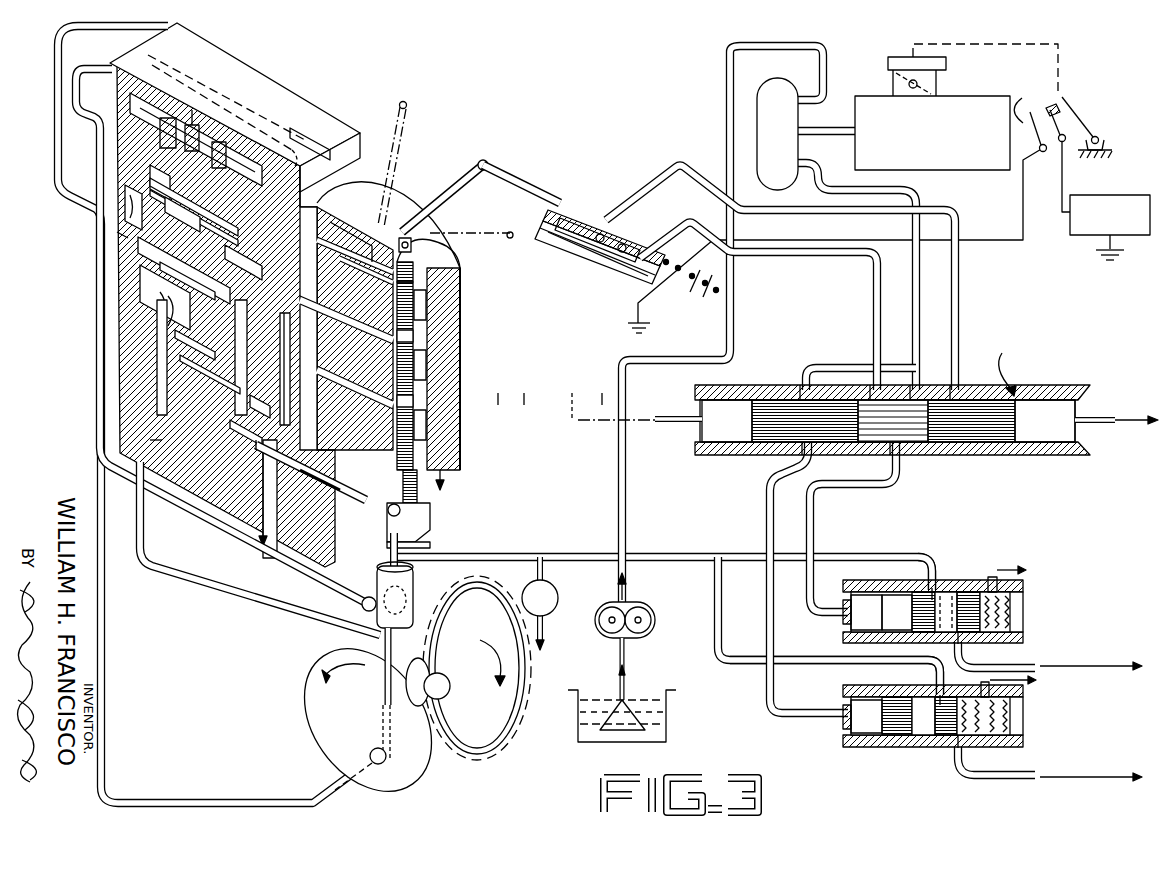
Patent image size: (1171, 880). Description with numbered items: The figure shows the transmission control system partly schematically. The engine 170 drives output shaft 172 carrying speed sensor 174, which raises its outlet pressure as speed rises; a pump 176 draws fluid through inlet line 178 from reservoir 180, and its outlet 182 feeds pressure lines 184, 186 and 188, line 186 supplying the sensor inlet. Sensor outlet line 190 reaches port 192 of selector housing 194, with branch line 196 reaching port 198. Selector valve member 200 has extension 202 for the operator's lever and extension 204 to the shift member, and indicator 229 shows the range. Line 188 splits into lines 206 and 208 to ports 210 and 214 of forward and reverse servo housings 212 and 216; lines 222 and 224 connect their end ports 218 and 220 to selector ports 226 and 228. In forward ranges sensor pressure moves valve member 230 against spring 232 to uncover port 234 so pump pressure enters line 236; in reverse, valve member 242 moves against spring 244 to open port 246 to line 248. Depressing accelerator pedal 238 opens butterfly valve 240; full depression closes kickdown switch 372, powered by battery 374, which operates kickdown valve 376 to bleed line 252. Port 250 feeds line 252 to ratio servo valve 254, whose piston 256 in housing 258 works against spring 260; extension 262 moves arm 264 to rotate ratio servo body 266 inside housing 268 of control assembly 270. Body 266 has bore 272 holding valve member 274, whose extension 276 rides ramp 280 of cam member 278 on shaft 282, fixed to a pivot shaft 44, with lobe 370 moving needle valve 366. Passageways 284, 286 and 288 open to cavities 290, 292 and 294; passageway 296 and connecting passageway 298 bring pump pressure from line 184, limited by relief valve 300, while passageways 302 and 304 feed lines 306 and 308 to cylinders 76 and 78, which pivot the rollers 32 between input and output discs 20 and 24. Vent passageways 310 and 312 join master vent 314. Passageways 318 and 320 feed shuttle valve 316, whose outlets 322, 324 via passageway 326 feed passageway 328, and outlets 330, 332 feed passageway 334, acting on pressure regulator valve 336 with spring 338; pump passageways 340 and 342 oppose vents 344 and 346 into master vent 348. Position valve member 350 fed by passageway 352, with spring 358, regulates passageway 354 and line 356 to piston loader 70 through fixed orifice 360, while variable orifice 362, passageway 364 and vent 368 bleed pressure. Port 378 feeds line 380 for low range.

The input toroidal disc member 20 is at (480, 702).
The output toroidal disc member 24 is at (364, 722).
The roller 32 is at (416, 659).
The pivot shaft 44 is at (378, 640).
The piston loader mechanism 70 is at (478, 748).
The cylinder 76 is at (377, 580).
The cylinder 78 is at (418, 770).
The engine 170 is at (956, 170).
The engine output shaft 172 is at (814, 130).
The speed sensor 174 is at (753, 78).
The pump 176 is at (652, 630).
The inlet line 178 is at (630, 668).
The fluid reservoir 180 is at (650, 732).
The outlet 182 is at (628, 586).
The pressure line 184 is at (570, 552).
The pressure line 186 is at (726, 86).
The pressure line 188 is at (692, 553).
The outlet line 190 is at (812, 172).
The port 192 is at (912, 390).
The selector housing 194 is at (720, 396).
The branch line 196 is at (860, 340).
The port 198 is at (798, 386).
The valve member 200 is at (906, 432).
The extension 202 is at (686, 420).
The extension 204 is at (1052, 448).
The pressure line 206 is at (905, 553).
The pressure line 208 is at (840, 665).
The port 210 is at (930, 582).
The forward clutch servo valve housing 212 is at (862, 638).
The port 214 is at (936, 685).
The reverse clutch servo valve housing 216 is at (870, 746).
The port 218 is at (843, 614).
The port 220 is at (846, 722).
The pressure line 222 is at (880, 495).
The pressure line 224 is at (766, 500).
The port 226 is at (892, 455).
The port 228 is at (812, 450).
The indicator 229 is at (576, 420).
The valve member 230 is at (948, 592).
The spring 232 is at (1010, 612).
The port 234 is at (954, 640).
The line 236 is at (992, 668).
The accelerator pedal 238 is at (1080, 108).
The butterfly valve 240 is at (938, 84).
The reverse clutch valve member 242 is at (944, 740).
The spring 244 is at (1010, 715).
The port 246 is at (965, 752).
The line 248 is at (1002, 780).
The port 250 is at (872, 388).
The line 252 is at (708, 224).
The ratio servo valve 254 is at (612, 188).
The piston 256 is at (602, 262).
The housing 258 is at (583, 255).
The spring 260 is at (596, 215).
The axial extension 262 is at (518, 180).
The arm 264 is at (475, 165).
The rotatable ratio servo body 266 is at (398, 170).
The housing 268 is at (398, 102).
The fluid pressure control assembly 270 is at (310, 95).
The bore 272 is at (412, 248).
The speed ratio servo valve member 274 is at (440, 292).
The extension 276 is at (418, 490).
The cam member 278 is at (420, 540).
The inclined ramp portion 280 is at (425, 516).
The shaft 282 is at (402, 568).
The fluid passageway 284 is at (350, 287).
The fluid passageway 286 is at (355, 375).
The fluid passageway 288 is at (380, 386).
The cavity 290 is at (353, 233).
The cavity 292 is at (328, 314).
The cavity 294 is at (397, 266).
The passageway 296 is at (303, 328).
The connecting passageway 298 is at (290, 363).
The relief valve 300 is at (556, 590).
The passageway 302 is at (310, 138).
The passageway 304 is at (228, 100).
The line 306 is at (74, 138).
The line 308 is at (56, 63).
The vent passageway 310 is at (428, 318).
The vent passageway 312 is at (436, 425).
The master vent passageway 314 is at (440, 362).
The shuttle valve 316 is at (215, 128).
The passageway 318 is at (300, 170).
The passageway 320 is at (162, 116).
The outlet passageway 322 is at (206, 123).
The outlet passageway 324 is at (232, 240).
The passageway 326 is at (236, 222).
The passageway 328 is at (191, 217).
The outlet passageway 330 is at (240, 145).
The outlet passageway 332 is at (232, 200).
The passageway 334 is at (149, 172).
The pressure regulator valve 336 is at (170, 255).
The spring 338 is at (128, 206).
The passageway 340 is at (260, 262).
The passageway 342 is at (266, 369).
The vent passageway 344 is at (187, 281).
The vent passageway 346 is at (238, 357).
The master vent passageway 348 is at (122, 233).
The position valve member 350 is at (188, 364).
The passageway 352 is at (268, 408).
The passageway 354 is at (142, 438).
The line 356 is at (242, 592).
The spring 358 is at (163, 329).
The fixed orifice 360 is at (165, 297).
The variable orifice 362 is at (260, 455).
The passageway 364 is at (222, 400).
The needle valve 366 is at (330, 448).
The vent passageway 368 is at (262, 488).
The lobe 370 is at (372, 508).
The kickdown switch 372 is at (1041, 147).
The battery 374 is at (1105, 195).
The kickdown valve 376 is at (708, 297).
The port 378 is at (958, 390).
The line 380 is at (672, 170).